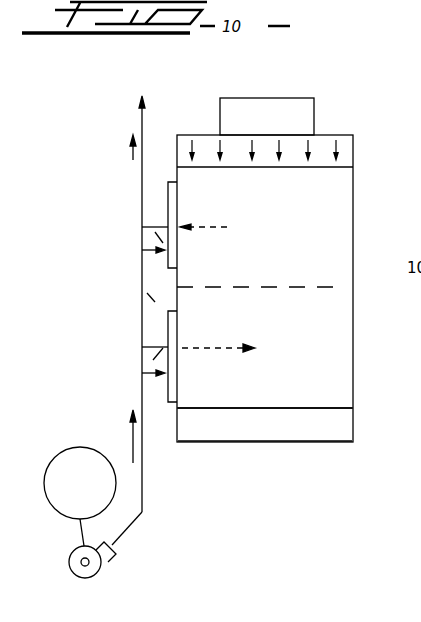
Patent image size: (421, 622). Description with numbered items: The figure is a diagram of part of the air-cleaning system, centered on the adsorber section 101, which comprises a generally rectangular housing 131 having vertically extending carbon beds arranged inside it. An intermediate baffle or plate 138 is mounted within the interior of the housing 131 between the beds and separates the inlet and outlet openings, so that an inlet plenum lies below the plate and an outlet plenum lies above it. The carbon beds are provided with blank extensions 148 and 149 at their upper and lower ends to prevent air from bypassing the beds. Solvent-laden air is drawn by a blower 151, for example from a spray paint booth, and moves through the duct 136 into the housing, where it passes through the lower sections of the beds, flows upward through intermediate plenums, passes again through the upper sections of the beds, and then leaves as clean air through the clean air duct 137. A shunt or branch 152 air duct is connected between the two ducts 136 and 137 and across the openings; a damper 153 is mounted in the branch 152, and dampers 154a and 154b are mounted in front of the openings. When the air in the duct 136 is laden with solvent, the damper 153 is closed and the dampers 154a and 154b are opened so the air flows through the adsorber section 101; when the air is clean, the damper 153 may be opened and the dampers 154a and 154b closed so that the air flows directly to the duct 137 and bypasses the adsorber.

The adsorber section 101 is at (100, 148).
The housing 131 is at (353, 200).
The duct 136 is at (143, 460).
The clean air duct 137 is at (142, 130).
The intermediate baffle or plate 138 is at (245, 287).
The blank extension 148 is at (347, 138).
The blank extension 149 is at (327, 430).
The blower 151 is at (107, 567).
The shunt or branch air duct 152 is at (140, 263).
The damper 153 is at (130, 300).
The damper 154a is at (153, 334).
The damper 154b is at (156, 222).